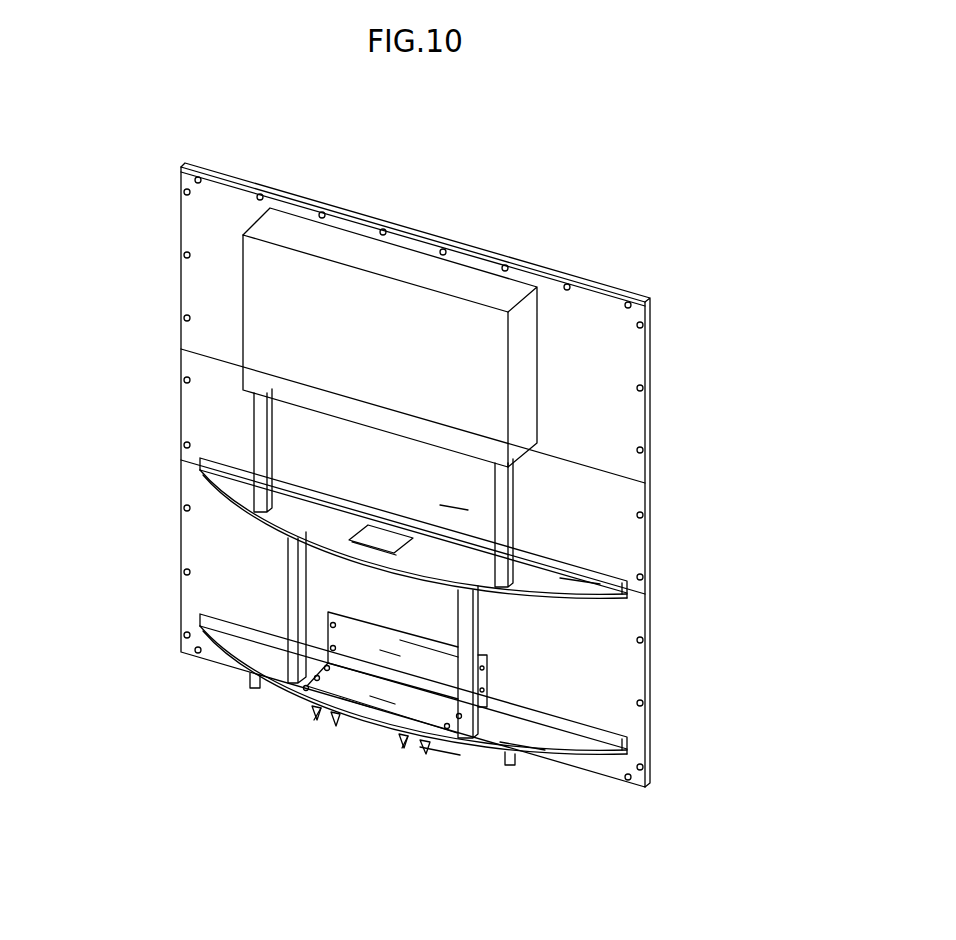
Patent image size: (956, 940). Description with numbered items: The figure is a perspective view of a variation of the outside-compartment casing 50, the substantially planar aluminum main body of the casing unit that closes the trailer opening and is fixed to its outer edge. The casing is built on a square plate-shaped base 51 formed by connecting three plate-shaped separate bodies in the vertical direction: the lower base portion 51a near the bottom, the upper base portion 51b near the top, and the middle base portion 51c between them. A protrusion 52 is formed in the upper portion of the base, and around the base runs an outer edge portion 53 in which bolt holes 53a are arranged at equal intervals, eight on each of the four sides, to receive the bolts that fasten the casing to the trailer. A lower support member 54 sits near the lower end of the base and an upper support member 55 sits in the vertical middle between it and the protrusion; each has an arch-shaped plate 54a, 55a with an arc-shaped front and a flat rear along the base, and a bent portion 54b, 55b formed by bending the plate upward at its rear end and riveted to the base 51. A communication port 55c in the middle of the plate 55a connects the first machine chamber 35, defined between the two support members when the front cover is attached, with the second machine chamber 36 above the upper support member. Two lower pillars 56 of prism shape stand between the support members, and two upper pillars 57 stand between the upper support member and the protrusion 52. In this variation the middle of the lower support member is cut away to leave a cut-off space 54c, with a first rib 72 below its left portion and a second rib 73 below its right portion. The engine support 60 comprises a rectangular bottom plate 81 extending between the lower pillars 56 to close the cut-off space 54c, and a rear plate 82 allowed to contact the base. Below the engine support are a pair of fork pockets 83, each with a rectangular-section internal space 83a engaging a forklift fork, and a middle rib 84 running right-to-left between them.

The outside-compartment casing 50 is at (586, 188).
The base 51 is at (180, 226).
The lower base portion 51a is at (190, 540).
The upper base portion 51b is at (190, 288).
The middle base portion 51c is at (190, 436).
The protrusion 52 is at (368, 303).
The outer edge portion 53 is at (190, 402).
The bolt holes 53a is at (187, 378).
The lower support member 54 is at (596, 755).
The arch-shaped plate 54a is at (527, 736).
The bent portion 54b is at (563, 718).
The cut-off space 54c is at (437, 752).
The upper support member 55 is at (553, 597).
The arch-shaped plate 55a is at (555, 582).
The bent portion 55b is at (434, 526).
The communication port 55c is at (382, 535).
The lower pillars 56 is at (287, 575).
The upper pillars 57 is at (258, 431).
The engine support 60 is at (358, 621).
The first rib 72 is at (258, 690).
The second rib 73 is at (503, 766).
The bottom plate 81 is at (388, 662).
The rear plate 82 is at (418, 652).
The fork pockets 83 is at (315, 725).
The internal space 83a is at (335, 727).
The middle rib 84 is at (380, 700).
The first machine chamber 35 is at (357, 703).
The second machine chamber 36 is at (468, 510).